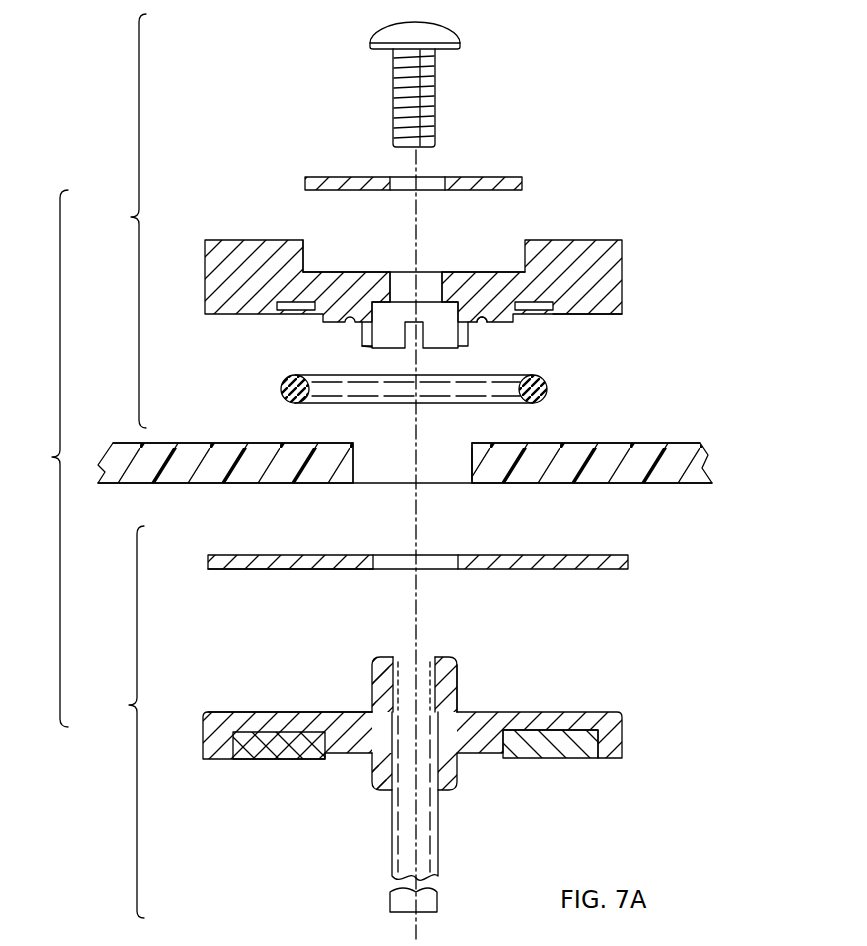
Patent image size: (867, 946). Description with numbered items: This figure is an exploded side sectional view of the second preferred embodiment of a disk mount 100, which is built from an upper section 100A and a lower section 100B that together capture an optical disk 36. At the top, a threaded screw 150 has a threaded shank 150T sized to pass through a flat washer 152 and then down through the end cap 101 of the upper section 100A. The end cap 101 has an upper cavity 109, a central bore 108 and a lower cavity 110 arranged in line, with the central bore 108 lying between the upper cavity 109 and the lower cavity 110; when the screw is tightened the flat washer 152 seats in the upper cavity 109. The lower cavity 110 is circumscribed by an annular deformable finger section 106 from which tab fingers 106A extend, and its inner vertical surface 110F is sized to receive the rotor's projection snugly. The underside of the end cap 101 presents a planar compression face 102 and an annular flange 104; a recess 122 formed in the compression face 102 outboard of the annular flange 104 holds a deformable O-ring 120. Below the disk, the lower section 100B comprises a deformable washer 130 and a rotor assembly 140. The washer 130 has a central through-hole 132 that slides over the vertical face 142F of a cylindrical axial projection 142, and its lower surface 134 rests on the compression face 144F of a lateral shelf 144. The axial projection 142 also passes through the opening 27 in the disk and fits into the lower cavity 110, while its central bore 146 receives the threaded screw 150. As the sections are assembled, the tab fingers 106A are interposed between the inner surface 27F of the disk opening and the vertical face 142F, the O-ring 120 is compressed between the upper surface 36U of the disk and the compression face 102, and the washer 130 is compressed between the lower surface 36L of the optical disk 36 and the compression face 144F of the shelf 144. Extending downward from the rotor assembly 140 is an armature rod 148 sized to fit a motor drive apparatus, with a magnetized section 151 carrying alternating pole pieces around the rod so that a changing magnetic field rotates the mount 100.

The disk mount 100 is at (37, 458).
The upper section 100A is at (108, 221).
The lower section 100B is at (104, 722).
The threaded screw 150 is at (450, 79).
The threaded shank 150T is at (437, 92).
The flat washer 152 is at (500, 178).
The end cap 101 is at (474, 293).
The upper cavity 109 is at (305, 240).
The inner vertical surface 110F is at (396, 292).
The central bore 108 is at (427, 280).
The compression face 102 is at (606, 314).
The recess 122 is at (287, 315).
The deformable finger section 106 is at (360, 332).
The tab fingers 106A is at (360, 348).
The lower cavity 110 is at (436, 348).
The annular flange 104 is at (486, 322).
The O-ring 120 is at (548, 392).
The optical disk 36 is at (432, 464).
The upper surface of the optical disk 36U is at (667, 443).
The lower surface of the optical disk 36L is at (673, 484).
The central opening of the optical disk 27 is at (384, 474).
The inner surface 27F is at (472, 476).
The deformable washer 130 is at (463, 585).
The lower surface of the washer 134 is at (292, 571).
The central through-hole 132 is at (450, 571).
The rotor assembly 140 is at (463, 747).
The cylindrical axial projection 142 is at (421, 702).
The central bore 146 is at (420, 660).
The vertical face 142F is at (460, 676).
The lateral shelf 144 is at (435, 734).
The compression face 144F is at (236, 712).
The magnetized section 151 is at (565, 760).
The armature rod 148 is at (440, 826).